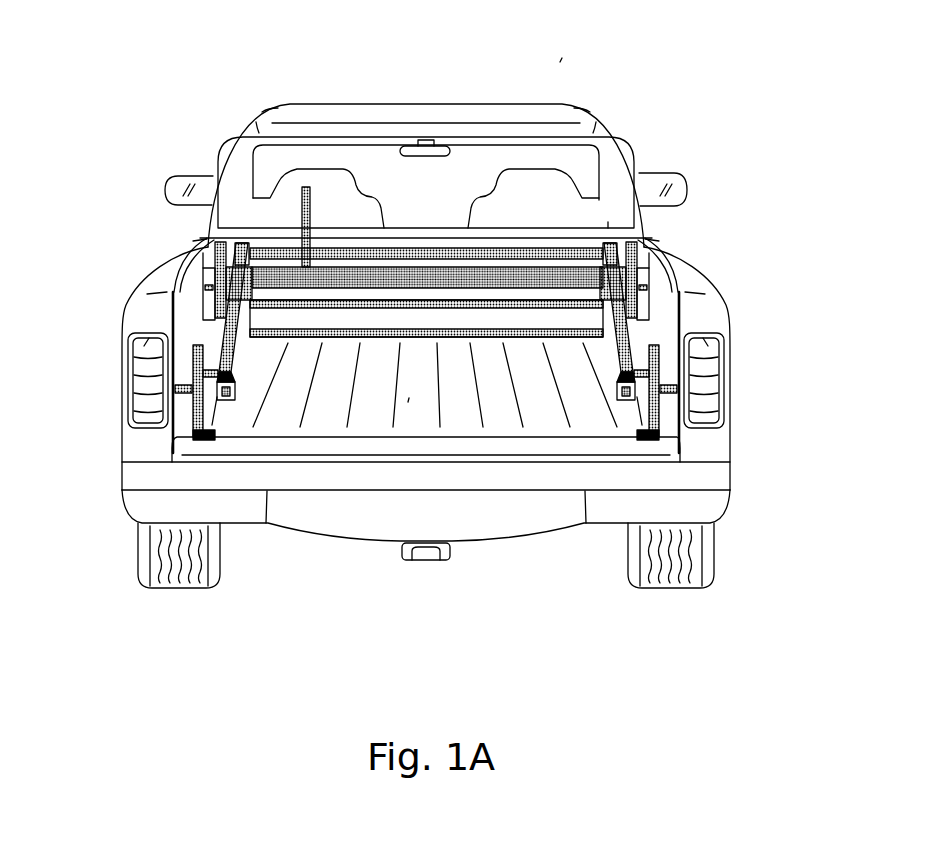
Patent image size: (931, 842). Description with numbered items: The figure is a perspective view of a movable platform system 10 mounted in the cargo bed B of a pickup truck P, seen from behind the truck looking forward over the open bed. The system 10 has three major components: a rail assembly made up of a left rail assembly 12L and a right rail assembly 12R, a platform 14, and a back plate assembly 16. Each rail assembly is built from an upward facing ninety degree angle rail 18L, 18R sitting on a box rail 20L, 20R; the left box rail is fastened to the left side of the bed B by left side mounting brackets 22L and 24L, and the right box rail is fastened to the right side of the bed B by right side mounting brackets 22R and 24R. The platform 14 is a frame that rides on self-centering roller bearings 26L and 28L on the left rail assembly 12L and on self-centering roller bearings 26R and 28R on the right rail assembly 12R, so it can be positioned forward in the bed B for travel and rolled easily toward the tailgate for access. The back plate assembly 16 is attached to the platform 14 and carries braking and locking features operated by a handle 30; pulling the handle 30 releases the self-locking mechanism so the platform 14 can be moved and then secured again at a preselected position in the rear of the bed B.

The pickup truck P is at (563, 57).
The cargo bed B is at (408, 402).
The movable platform system 10 is at (608, 221).
The left rail assembly 12L is at (241, 350).
The right rail assembly 12R is at (611, 350).
The platform 14 is at (397, 312).
The back plate assembly 16 is at (388, 275).
The left angle rail 18L is at (204, 325).
The right angle rail 18R is at (648, 326).
The left box rail 20L is at (222, 392).
The right box rail 20R is at (630, 392).
The left side mounting bracket 22L is at (187, 357).
The right side mounting bracket 22R is at (665, 357).
The left side mounting bracket 24L is at (212, 255).
The right side mounting bracket 24R is at (652, 252).
The self-centering bearing 26L is at (230, 290).
The self-centering bearing 26R is at (623, 292).
The self-centering bearing 28L is at (238, 250).
The self-centering bearing 28R is at (637, 256).
The handle 30 is at (312, 205).